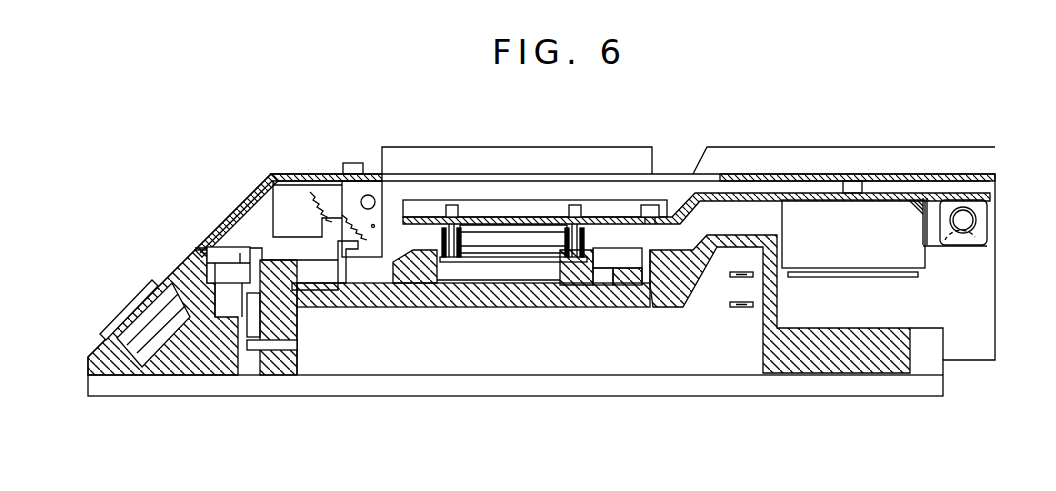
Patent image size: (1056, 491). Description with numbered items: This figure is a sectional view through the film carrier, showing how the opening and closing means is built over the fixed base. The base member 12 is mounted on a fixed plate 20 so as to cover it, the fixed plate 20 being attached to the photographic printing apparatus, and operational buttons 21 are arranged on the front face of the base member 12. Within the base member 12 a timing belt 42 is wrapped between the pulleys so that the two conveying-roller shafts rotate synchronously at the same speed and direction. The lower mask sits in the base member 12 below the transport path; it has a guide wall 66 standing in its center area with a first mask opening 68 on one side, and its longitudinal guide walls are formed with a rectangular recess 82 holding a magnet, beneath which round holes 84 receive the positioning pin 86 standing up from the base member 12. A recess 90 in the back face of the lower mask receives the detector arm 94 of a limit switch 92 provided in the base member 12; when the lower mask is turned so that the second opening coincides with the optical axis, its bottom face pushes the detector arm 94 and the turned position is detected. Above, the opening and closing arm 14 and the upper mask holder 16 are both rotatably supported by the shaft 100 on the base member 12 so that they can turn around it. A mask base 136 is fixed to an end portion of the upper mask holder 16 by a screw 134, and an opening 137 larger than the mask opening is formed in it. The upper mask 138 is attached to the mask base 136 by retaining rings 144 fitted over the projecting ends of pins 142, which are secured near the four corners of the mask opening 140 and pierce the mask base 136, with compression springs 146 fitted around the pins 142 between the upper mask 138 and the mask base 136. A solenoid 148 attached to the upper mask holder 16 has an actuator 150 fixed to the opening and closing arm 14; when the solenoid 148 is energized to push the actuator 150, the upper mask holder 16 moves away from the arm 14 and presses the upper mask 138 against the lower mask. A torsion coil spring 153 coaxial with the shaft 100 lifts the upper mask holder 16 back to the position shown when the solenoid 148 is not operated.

The base member 12 is at (283, 367).
The opening and closing arm 14 is at (733, 173).
The upper mask holder 16 is at (738, 192).
The fixed plate 20 is at (705, 396).
The operational buttons 21 is at (140, 284).
The timing belt 42 is at (735, 310).
The guide wall 66 is at (428, 252).
The first mask opening 68 is at (557, 263).
The rectangular recess 82 is at (660, 288).
The round holes 84 is at (633, 275).
The positioning pin 86 is at (615, 273).
The recess 90 is at (243, 290).
The limit switch 92 is at (293, 340).
The detector arm 94 is at (297, 315).
The shaft 100 is at (985, 220).
The screw 134 is at (650, 205).
The mask base 136 is at (610, 205).
The opening 137 is at (472, 205).
The upper mask 138 is at (452, 262).
The mask opening 140 is at (482, 255).
The pins 142 is at (435, 208).
The retaining rings 144 is at (436, 205).
The compression springs 146 is at (530, 205).
The solenoid 148 is at (917, 262).
The actuator 150 is at (868, 174).
The torsion coil spring 153 is at (947, 248).